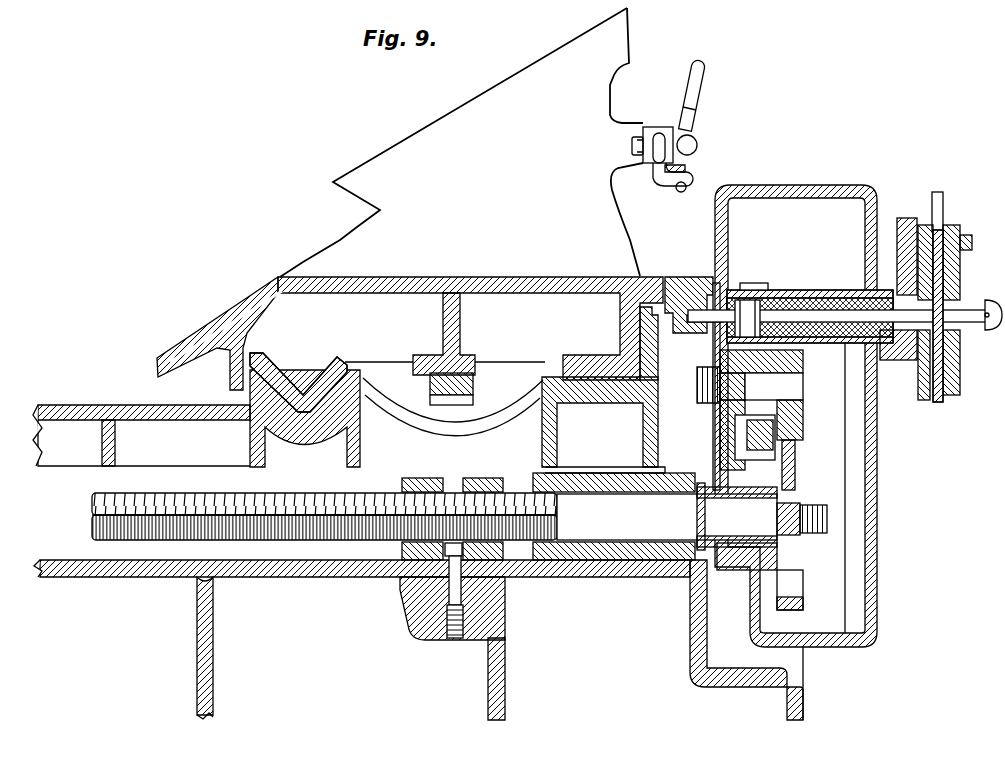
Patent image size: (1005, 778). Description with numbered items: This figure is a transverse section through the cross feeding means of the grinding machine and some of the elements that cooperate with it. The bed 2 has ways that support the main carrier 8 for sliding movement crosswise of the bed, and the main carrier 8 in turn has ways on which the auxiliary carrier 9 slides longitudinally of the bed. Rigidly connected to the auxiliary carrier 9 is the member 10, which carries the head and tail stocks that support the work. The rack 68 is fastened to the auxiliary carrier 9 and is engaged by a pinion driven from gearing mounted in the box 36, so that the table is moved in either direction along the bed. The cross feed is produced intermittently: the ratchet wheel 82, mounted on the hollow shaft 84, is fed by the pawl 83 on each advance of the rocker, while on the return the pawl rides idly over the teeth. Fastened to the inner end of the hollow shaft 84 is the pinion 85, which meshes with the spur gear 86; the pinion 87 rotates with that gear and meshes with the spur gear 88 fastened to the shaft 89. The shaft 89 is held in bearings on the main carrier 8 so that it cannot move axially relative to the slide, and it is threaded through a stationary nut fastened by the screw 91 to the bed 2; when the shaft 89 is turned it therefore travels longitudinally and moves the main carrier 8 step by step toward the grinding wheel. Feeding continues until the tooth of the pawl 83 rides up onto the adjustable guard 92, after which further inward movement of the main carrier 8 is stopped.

The bed 2 is at (215, 688).
The main carrier 8 is at (97, 405).
The auxiliary carrier 9 is at (208, 330).
The member 10 is at (385, 150).
The box 36 is at (880, 528).
The rack 68 is at (476, 378).
The ratchet wheel 82 is at (943, 400).
The pawl 83 is at (945, 204).
The hollow shaft 84 is at (915, 350).
The pinion 85 is at (763, 283).
The spur gear 86 is at (745, 436).
The pinion 87 is at (805, 362).
The spur gear 88 is at (798, 462).
The shaft 89 is at (632, 522).
The screw 91 is at (452, 585).
The adjustable guard 92 is at (931, 222).